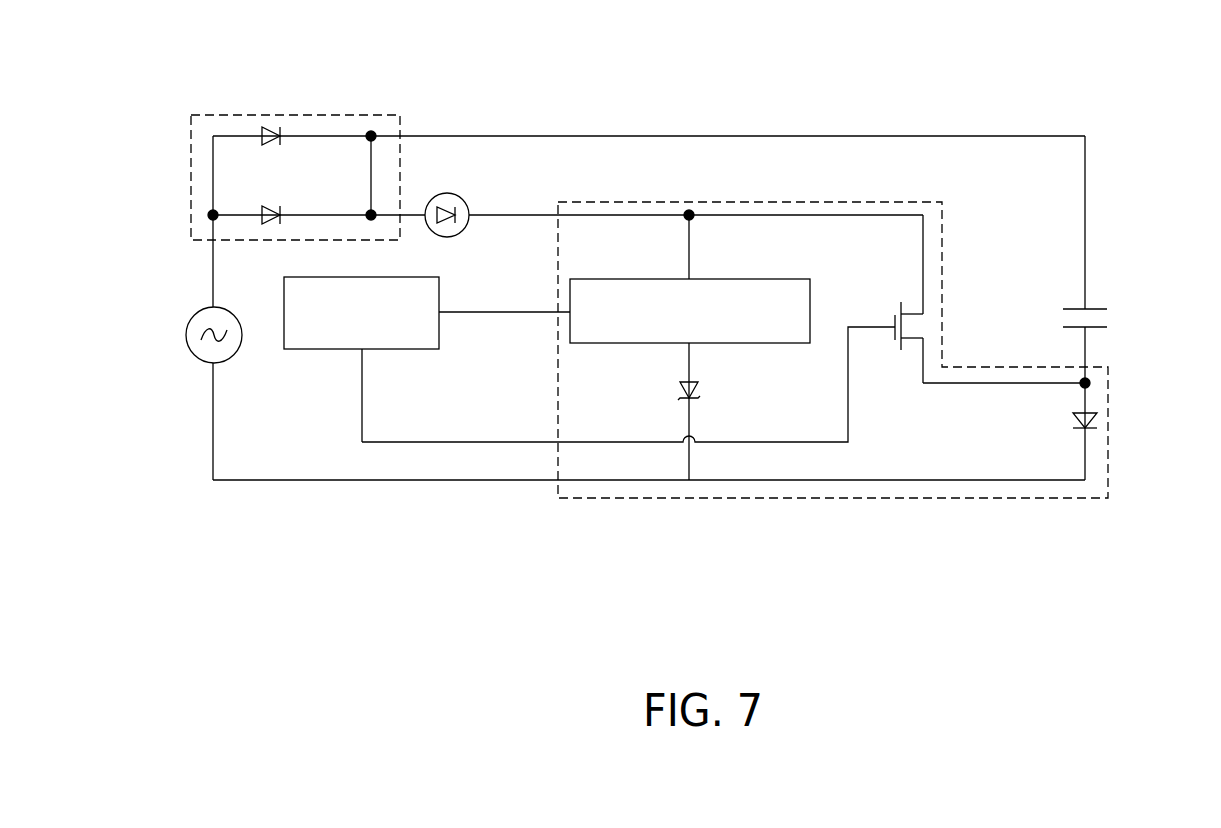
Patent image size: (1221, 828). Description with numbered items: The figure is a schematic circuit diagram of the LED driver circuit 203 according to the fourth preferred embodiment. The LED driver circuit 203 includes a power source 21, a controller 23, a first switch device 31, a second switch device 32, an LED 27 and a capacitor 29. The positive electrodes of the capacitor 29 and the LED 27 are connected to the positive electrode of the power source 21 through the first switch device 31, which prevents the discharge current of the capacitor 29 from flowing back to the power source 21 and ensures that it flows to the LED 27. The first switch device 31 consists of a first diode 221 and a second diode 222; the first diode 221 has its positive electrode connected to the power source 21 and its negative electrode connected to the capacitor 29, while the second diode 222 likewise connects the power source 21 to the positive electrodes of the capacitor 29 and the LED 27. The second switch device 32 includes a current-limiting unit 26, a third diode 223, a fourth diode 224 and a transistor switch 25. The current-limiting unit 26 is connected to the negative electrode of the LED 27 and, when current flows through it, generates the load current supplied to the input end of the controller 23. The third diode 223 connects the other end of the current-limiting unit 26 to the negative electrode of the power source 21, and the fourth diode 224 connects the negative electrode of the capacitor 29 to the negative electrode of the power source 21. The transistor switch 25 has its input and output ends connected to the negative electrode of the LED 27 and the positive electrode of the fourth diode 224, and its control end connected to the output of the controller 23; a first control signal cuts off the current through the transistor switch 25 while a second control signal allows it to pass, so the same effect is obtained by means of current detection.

The LED driver circuit 203 is at (1110, 82).
The first switch device 31 is at (360, 115).
The first diode 221 is at (280, 128).
The second diode 222 is at (284, 224).
The LED 27 is at (466, 200).
The power source 21 is at (196, 322).
The controller 23 is at (440, 292).
The current-limiting unit 26 is at (575, 325).
The third diode 223 is at (676, 388).
The transistor switch 25 is at (912, 340).
The capacitor 29 is at (1093, 307).
The fourth diode 224 is at (1097, 414).
The second switch device 32 is at (1024, 500).